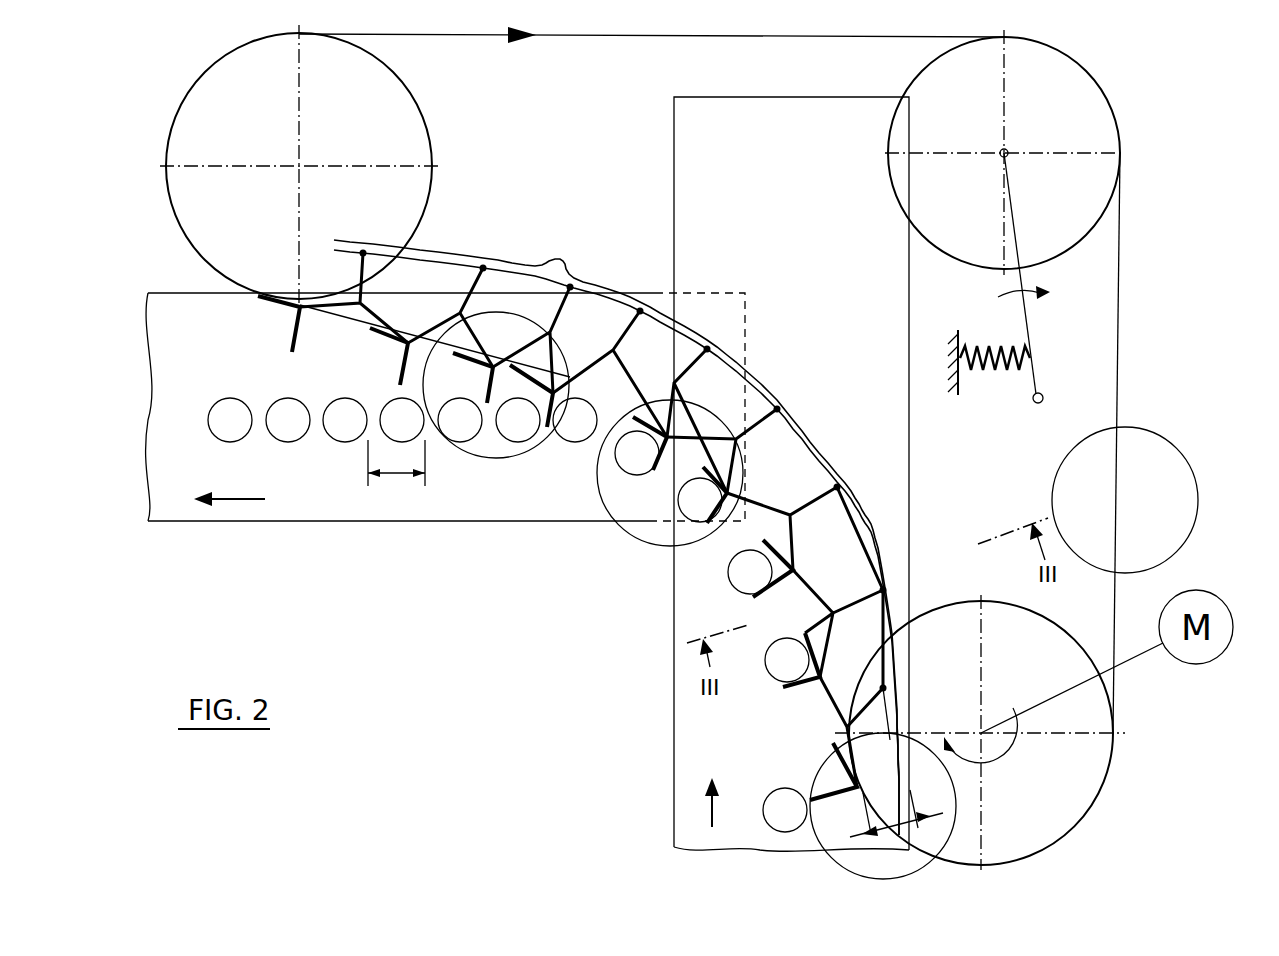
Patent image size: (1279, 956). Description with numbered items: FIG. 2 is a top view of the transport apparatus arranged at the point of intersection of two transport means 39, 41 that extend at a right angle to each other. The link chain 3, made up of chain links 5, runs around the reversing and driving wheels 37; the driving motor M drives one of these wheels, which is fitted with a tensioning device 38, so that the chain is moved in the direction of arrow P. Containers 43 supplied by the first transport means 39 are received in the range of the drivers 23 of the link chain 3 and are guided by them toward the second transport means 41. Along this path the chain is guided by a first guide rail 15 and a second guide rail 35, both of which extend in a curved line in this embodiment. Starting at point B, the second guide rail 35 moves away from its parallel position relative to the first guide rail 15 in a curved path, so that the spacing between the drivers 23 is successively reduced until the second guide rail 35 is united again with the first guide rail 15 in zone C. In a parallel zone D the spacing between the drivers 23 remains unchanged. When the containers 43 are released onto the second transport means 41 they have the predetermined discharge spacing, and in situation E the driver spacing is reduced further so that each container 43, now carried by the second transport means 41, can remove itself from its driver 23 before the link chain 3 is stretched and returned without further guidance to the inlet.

The link chain 3 is at (392, 304).
The chain links 5 is at (440, 317).
The first guide rail 15 is at (807, 615).
The drivers 23 is at (636, 462).
The second guide rail 35 is at (865, 525).
The reversing and driving wheels 37 is at (430, 130).
The tensioning device 38 is at (987, 380).
The first transport means 39 is at (674, 803).
The second transport means 41 is at (228, 510).
The containers 43 is at (610, 473).
The detail A is at (658, 547).
The point B is at (1190, 465).
The zone C is at (826, 850).
The zone D is at (470, 452).
The situation E is at (549, 438).
The arrow P is at (651, 48).